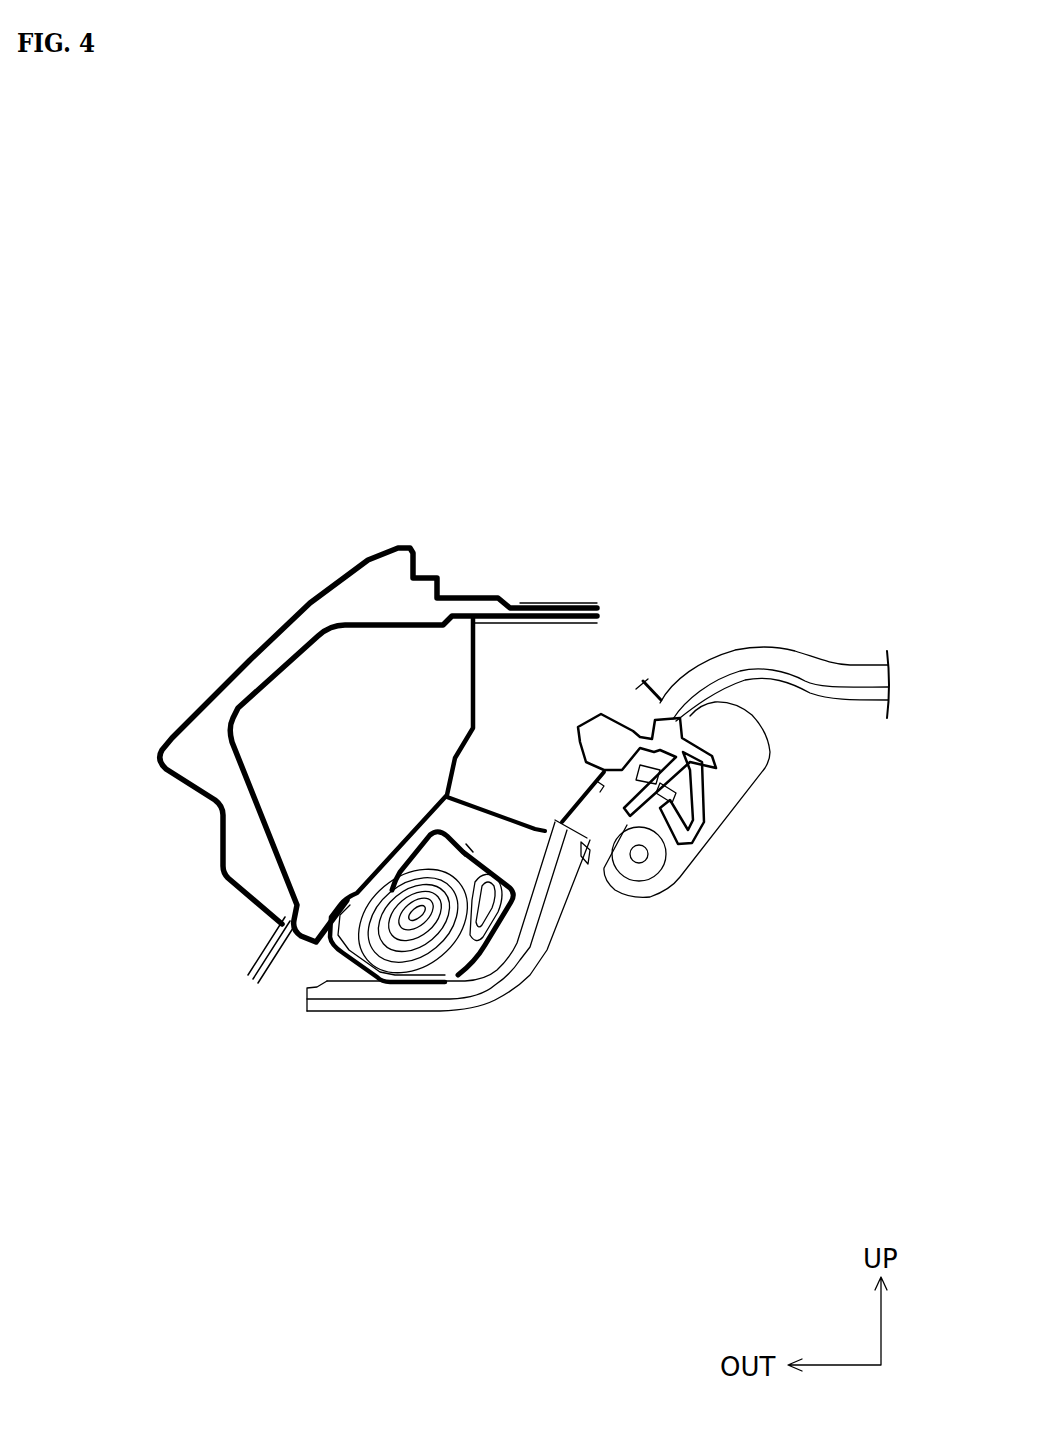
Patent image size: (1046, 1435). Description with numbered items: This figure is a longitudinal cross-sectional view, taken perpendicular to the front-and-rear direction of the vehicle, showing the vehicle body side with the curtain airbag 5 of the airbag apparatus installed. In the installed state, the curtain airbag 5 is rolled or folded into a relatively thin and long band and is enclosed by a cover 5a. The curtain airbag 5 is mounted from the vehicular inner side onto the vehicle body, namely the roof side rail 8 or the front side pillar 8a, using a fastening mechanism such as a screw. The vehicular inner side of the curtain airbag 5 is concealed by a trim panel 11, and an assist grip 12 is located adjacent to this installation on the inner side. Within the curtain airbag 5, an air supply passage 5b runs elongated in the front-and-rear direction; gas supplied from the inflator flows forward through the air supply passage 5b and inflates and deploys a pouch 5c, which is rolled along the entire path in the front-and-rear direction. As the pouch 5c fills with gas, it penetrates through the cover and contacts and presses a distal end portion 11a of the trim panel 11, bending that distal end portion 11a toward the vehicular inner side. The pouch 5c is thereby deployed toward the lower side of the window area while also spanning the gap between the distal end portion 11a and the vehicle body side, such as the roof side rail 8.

The curtain airbag 5 is at (469, 919).
The cover 5a is at (474, 982).
The air supply passage 5b is at (461, 851).
The pouch 5c is at (427, 966).
The roof side rail 8 is at (307, 597).
The front side pillar 8a is at (476, 657).
The trim panel 11 is at (460, 972).
The distal end portion 11a is at (340, 1004).
The assist grip 12 is at (772, 767).